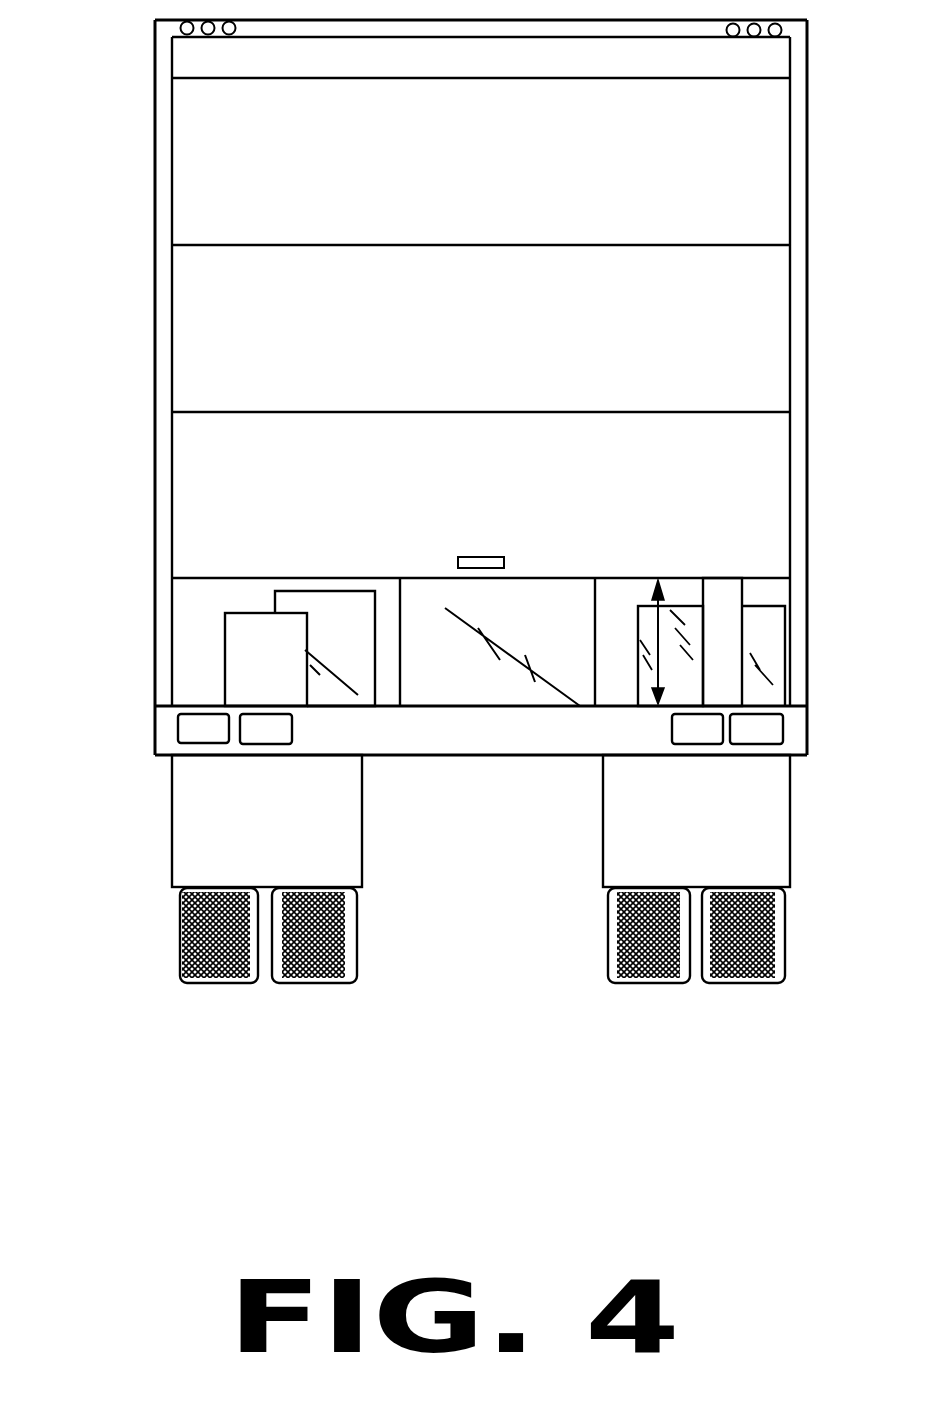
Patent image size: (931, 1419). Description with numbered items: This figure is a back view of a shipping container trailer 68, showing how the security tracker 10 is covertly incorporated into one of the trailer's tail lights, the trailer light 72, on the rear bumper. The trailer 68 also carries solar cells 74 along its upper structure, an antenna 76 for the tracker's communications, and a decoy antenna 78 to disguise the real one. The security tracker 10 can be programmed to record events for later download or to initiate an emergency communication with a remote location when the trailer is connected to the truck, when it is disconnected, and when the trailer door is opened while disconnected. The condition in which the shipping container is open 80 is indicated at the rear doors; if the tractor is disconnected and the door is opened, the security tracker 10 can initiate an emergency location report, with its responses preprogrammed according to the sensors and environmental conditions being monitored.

The security tracker 10 is at (190, 690).
The trailer 68 is at (155, 502).
The trailer light 72 is at (196, 700).
The solar cells 74 is at (378, 22).
The antenna 76 is at (160, 568).
The decoy antenna 78 is at (802, 560).
The shipping container open 80 is at (656, 630).